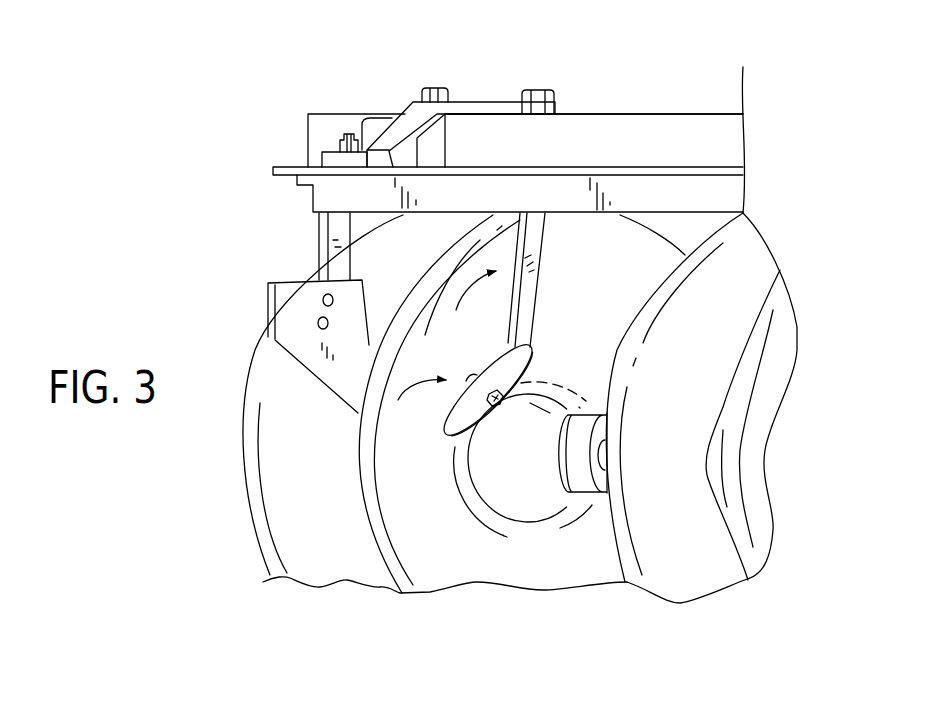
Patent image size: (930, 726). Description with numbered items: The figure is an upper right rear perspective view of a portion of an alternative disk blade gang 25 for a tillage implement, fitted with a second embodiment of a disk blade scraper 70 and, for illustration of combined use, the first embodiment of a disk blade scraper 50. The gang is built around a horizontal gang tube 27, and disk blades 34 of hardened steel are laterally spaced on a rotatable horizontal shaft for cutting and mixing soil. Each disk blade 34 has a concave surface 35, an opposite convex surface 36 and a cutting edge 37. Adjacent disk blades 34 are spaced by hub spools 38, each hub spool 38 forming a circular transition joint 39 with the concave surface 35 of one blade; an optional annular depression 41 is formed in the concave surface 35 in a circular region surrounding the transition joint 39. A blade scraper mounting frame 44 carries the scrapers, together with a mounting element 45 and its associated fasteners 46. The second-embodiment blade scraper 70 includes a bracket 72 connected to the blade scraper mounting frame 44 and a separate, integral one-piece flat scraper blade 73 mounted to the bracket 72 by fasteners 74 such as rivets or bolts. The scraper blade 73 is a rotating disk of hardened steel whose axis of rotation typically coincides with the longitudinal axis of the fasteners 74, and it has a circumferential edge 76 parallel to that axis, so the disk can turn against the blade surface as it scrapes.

The disk blade gang 25 is at (532, 622).
The horizontal gang tube 27 is at (615, 135).
The disk blades 34 is at (270, 492).
The concave surface 35 is at (481, 562).
The convex surface 36 is at (239, 251).
The cutting edge 37 is at (253, 538).
The hub spools 38 is at (548, 490).
The circular transition joint 39 is at (530, 527).
The annular depression 41 is at (545, 382).
The blade scraper mounting frame 44 is at (733, 196).
The mounting element 45 is at (487, 107).
The fasteners 46 is at (532, 88).
The disk blade scraper 50 is at (299, 246).
The disk blade scraper 70 is at (469, 307).
The bracket 72 is at (530, 243).
The flat scraper blade 73 is at (523, 357).
The fasteners 74 is at (414, 405).
The circumferential edge 76 is at (445, 422).